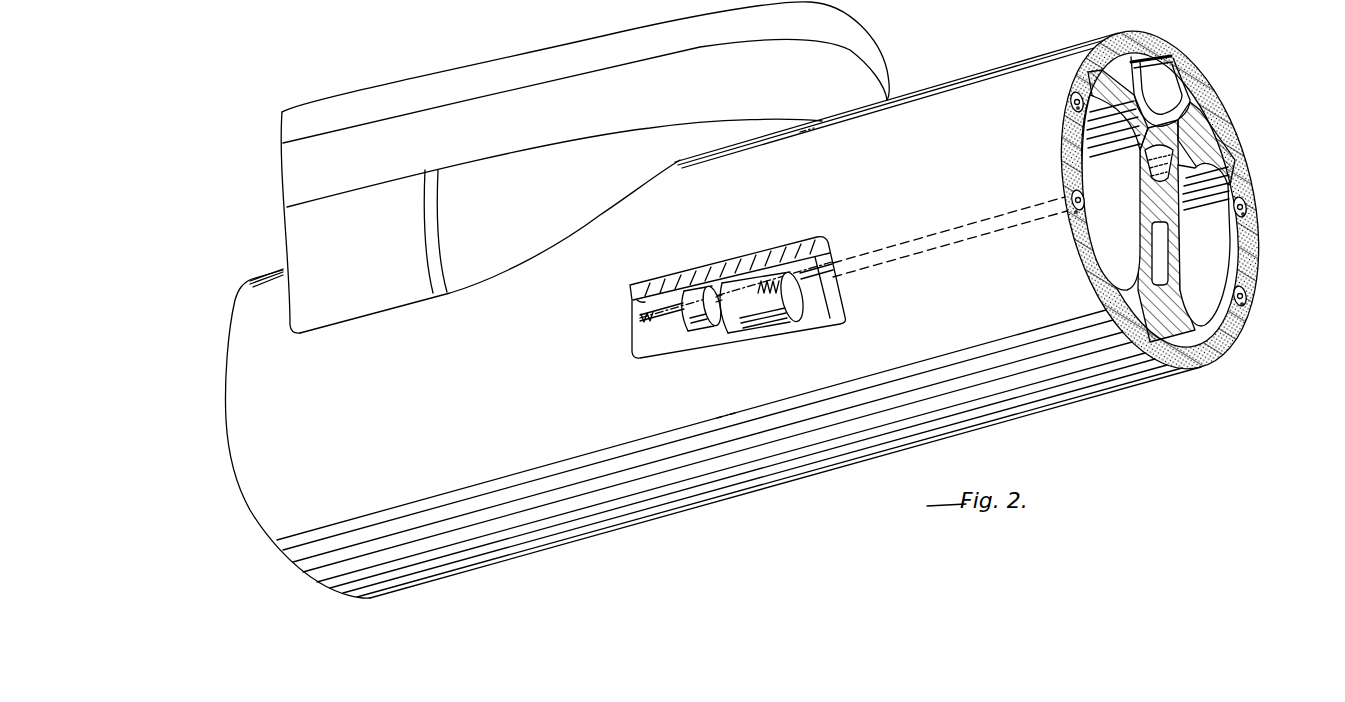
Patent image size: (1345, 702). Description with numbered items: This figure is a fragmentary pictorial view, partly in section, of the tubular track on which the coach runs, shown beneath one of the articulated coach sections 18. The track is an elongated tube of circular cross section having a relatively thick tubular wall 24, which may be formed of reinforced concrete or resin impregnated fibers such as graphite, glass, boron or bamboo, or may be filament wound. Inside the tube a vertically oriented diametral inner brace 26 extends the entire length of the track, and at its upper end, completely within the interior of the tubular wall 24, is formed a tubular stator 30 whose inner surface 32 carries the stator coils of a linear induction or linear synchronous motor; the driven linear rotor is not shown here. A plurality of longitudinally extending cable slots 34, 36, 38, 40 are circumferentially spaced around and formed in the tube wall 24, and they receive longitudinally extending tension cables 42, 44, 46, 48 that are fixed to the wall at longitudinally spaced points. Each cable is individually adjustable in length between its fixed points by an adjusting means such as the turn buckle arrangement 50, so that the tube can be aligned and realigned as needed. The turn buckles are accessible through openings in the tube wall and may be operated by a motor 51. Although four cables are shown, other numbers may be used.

The coach section 18 is at (615, 190).
The tubular wall 24 is at (1262, 244).
The diametral inner brace 26 is at (1172, 243).
The tubular stator 30 is at (1205, 118).
The inner surface 32 is at (1180, 93).
The cable slot 34 is at (1246, 213).
The cable slot 36 is at (1246, 306).
The cable slot 38 is at (1072, 217).
The cable slot 40 is at (1068, 95).
The tension cable 42 is at (1243, 201).
The tension cable 44 is at (1244, 297).
The tension cable 46 is at (1068, 193).
The tension cable 48 is at (1072, 108).
The turn buckle arrangement 50 is at (716, 343).
The motor 51 is at (782, 330).